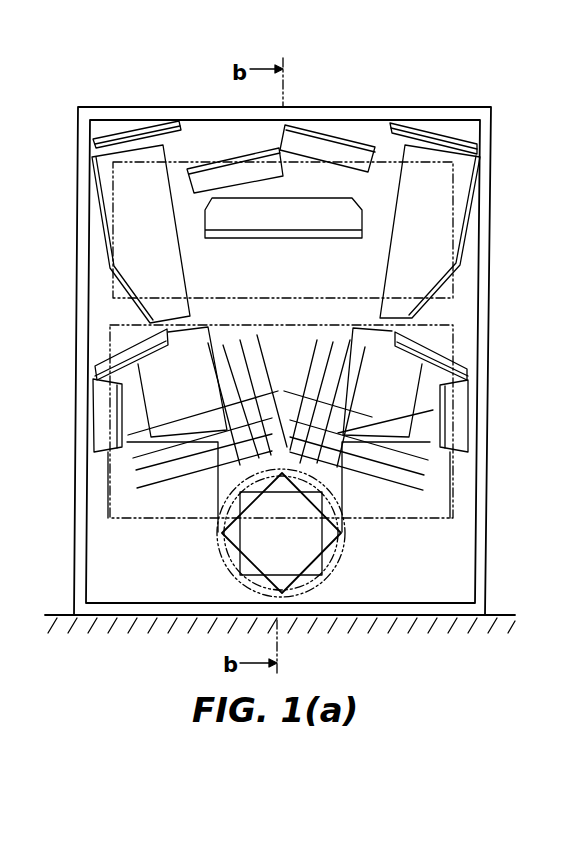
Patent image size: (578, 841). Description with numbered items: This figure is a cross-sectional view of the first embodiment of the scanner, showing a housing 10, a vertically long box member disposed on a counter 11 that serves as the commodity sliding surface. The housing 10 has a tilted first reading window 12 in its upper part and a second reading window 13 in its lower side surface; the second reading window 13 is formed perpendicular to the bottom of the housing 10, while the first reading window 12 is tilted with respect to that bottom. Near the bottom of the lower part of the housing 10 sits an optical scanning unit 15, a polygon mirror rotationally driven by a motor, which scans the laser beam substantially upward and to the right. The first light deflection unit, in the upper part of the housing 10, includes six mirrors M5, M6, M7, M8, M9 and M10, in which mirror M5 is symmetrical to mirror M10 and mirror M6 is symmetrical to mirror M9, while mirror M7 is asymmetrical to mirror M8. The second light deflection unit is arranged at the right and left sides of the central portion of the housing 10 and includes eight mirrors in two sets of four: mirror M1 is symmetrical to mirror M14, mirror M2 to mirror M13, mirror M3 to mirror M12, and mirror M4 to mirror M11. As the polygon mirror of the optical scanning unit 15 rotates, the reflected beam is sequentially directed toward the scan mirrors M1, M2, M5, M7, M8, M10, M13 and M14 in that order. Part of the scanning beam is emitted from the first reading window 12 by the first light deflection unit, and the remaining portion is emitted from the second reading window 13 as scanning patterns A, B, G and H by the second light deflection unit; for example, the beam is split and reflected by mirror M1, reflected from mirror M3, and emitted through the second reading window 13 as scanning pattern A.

The housing 10 is at (316, 114).
The counter 11 is at (502, 613).
The first reading window 12 is at (455, 187).
The second reading window 13 is at (455, 340).
The optical scanning unit 15 is at (298, 552).
The mirror M1 is at (470, 438).
The mirror M2 is at (467, 370).
The mirror M3 is at (405, 408).
The mirror M4 is at (445, 490).
The mirror M5 is at (447, 237).
The mirror M6 is at (436, 123).
The mirror M7 is at (348, 138).
The mirror M8 is at (193, 167).
The mirror M9 is at (146, 122).
The mirror M10 is at (122, 200).
The mirror M11 is at (114, 500).
The mirror M12 is at (162, 408).
The mirror M13 is at (122, 344).
The mirror M14 is at (93, 408).
The scanning pattern A is at (345, 333).
The scanning pattern B is at (425, 470).
The scanning pattern G is at (135, 488).
The scanning pattern H is at (240, 335).